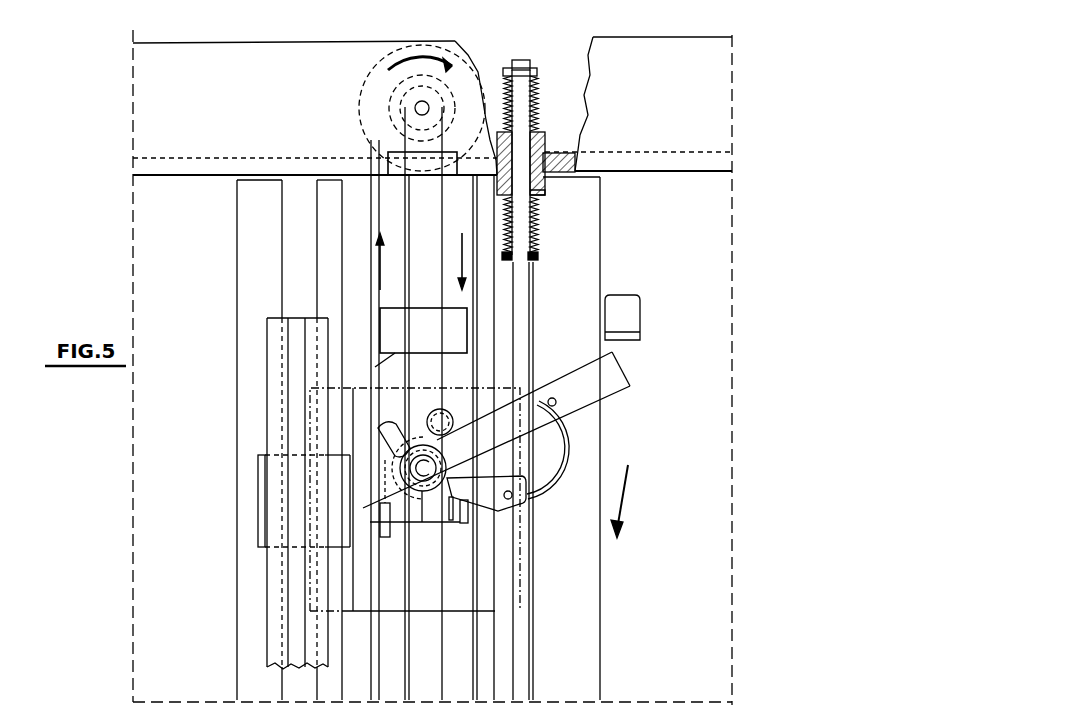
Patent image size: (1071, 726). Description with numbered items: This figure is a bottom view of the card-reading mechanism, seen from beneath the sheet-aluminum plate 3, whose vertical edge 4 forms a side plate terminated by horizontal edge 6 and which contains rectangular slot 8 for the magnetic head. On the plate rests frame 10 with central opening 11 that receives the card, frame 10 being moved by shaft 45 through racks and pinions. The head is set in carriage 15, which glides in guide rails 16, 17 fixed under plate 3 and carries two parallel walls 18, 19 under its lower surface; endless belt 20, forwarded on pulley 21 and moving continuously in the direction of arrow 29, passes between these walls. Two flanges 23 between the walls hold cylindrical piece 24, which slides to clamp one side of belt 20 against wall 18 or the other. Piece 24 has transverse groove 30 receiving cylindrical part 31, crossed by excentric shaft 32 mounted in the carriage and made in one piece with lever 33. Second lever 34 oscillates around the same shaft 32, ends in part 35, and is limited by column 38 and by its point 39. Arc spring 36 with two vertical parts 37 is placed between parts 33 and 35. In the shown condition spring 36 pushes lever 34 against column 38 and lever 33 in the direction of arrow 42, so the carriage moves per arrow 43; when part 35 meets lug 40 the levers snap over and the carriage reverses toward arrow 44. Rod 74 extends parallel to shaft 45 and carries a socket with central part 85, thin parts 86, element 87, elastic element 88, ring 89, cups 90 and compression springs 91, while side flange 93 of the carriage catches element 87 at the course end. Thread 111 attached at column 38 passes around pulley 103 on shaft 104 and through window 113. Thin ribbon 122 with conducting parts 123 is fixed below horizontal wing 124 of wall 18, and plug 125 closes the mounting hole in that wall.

The plate 3 is at (693, 255).
The vertical edge 4 is at (563, 163).
The horizontal edge 6 is at (292, 93).
The rectangular slot 8 is at (381, 663).
The frame 10 is at (420, 325).
The central opening 11 is at (385, 358).
The carriage 15 is at (423, 600).
The guide rail 16 is at (248, 350).
The guide rail 17 is at (565, 592).
The parallel wall 18 is at (366, 598).
The parallel wall 19 is at (483, 592).
The endless belt 20 is at (371, 295).
The pulley 21 is at (373, 70).
The flange 23 is at (387, 537).
The cylindrical piece 24 is at (452, 520).
The arrow 29 is at (414, 56).
The cylindrical transverse groove 30 is at (422, 505).
The cylindrical part 31 is at (397, 485).
The excentric shaft 32 is at (413, 467).
The lever 33 is at (470, 480).
The second lever 34 is at (507, 423).
The end part 35 is at (597, 375).
The arc spring 36 is at (563, 465).
The vertical part 37 is at (552, 398).
The column 38 is at (438, 410).
The point 39 is at (400, 445).
The lug 40 is at (630, 333).
The arrow 42 is at (628, 493).
The arrow 43 is at (376, 257).
The arrow 44 is at (462, 257).
The shaft 45 is at (300, 270).
The rod 74 is at (520, 320).
The cylindrical central part 85 is at (545, 183).
The cylindrical part of slight thickness 86 is at (537, 118).
The element 87 is at (538, 257).
The elastic element 88 is at (529, 65).
The ring 89 is at (535, 72).
The cup 90 is at (545, 142).
The compression spring 91 is at (537, 97).
The side flange 93 is at (543, 460).
The small pulley 103 is at (403, 97).
The shaft 104 is at (416, 107).
The thread 111 is at (443, 653).
The window 113 is at (397, 172).
The thin ribbon 122 is at (295, 577).
The conducting part 123 is at (312, 645).
The horizontal wing 124 is at (262, 498).
The plug 125 is at (275, 536).